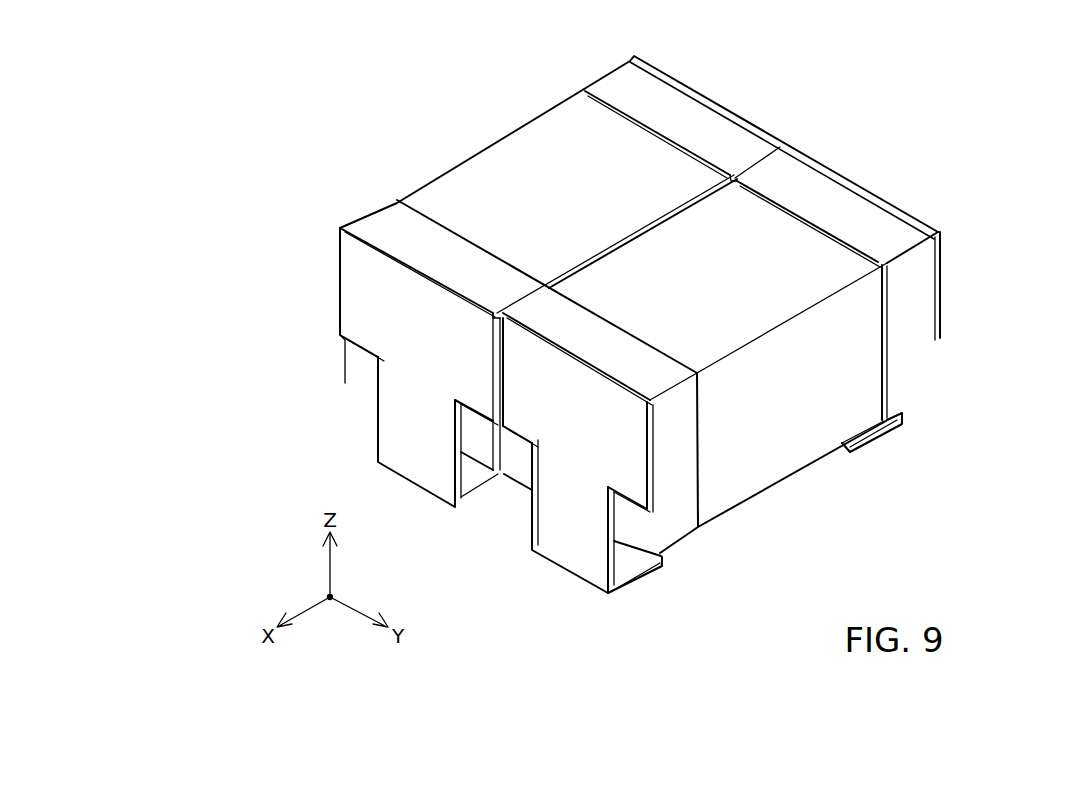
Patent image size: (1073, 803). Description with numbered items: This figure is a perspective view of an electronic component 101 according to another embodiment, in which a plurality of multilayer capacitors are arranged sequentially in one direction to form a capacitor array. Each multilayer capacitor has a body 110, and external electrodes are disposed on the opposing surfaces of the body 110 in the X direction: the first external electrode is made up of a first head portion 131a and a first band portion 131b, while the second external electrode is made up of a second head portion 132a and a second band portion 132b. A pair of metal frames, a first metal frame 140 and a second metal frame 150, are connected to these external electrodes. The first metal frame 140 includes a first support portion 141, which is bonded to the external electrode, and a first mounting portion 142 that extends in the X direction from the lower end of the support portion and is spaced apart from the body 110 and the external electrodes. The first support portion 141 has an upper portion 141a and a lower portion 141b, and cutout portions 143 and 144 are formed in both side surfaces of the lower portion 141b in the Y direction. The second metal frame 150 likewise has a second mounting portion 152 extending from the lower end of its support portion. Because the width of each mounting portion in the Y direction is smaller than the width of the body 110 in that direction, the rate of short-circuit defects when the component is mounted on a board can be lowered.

The electronic component 101 is at (343, 61).
The body 110 is at (498, 160).
The first head portion 131a is at (640, 528).
The first band portion 131b is at (638, 353).
The second head portion 132a is at (937, 368).
The second band portion 132b is at (862, 217).
The first metal frame 140 is at (337, 281).
The first support portion 141 is at (250, 377).
The upper portion of the first support portion 141a is at (375, 332).
The lower portion of the first support portion 141b is at (400, 432).
The first mounting portion 142 is at (625, 560).
The cutout portion 143 is at (382, 356).
The cutout portion 144 is at (612, 503).
The second metal frame 150 is at (948, 290).
The second mounting portion 152 is at (866, 440).